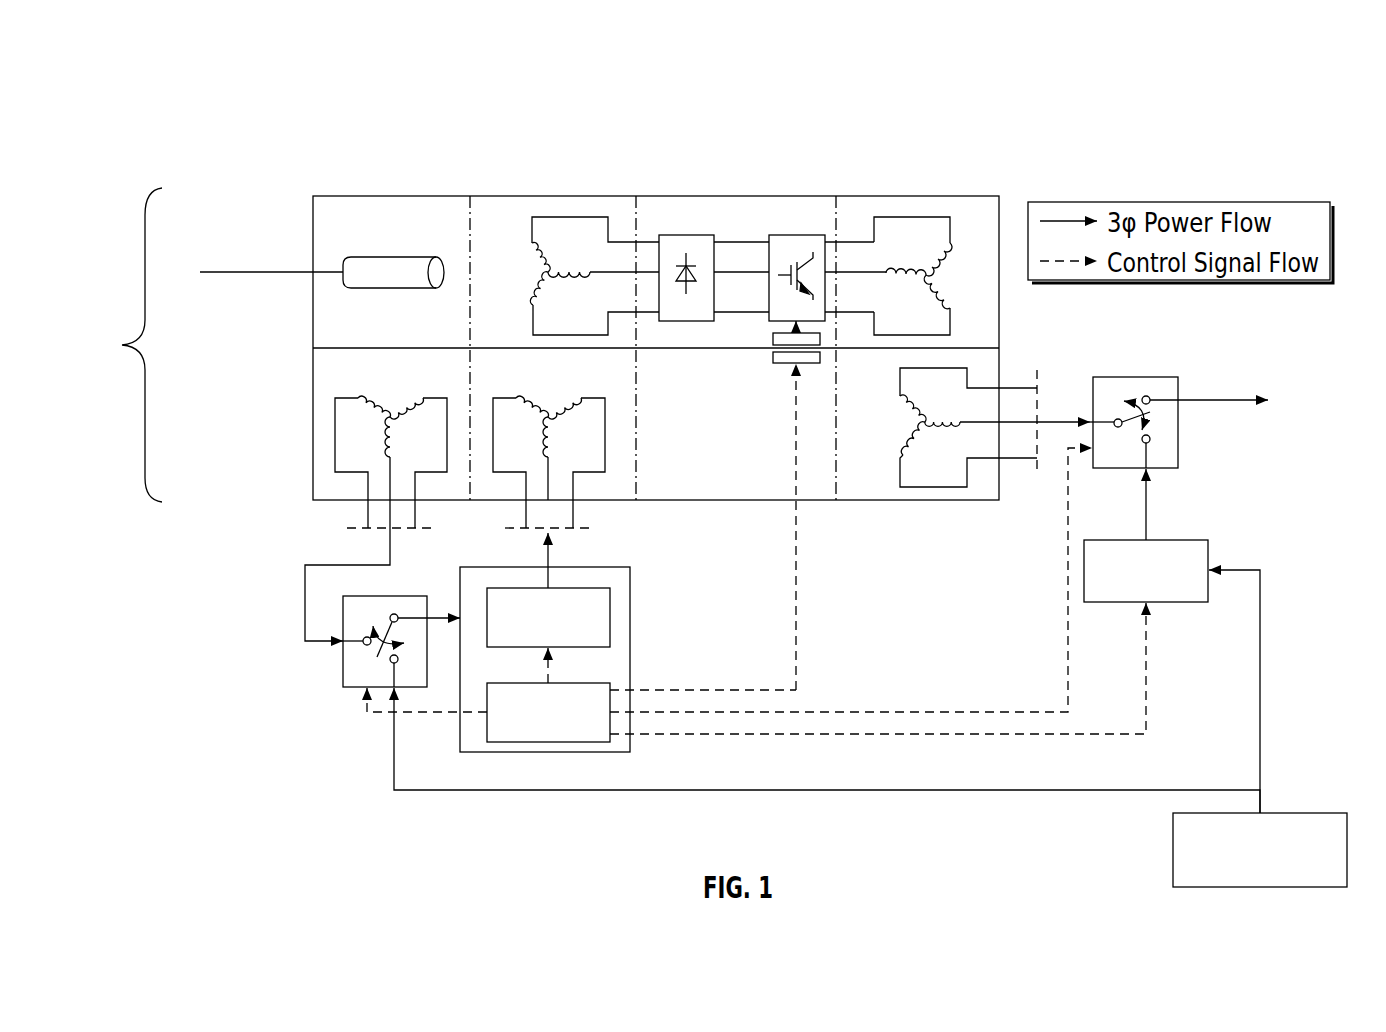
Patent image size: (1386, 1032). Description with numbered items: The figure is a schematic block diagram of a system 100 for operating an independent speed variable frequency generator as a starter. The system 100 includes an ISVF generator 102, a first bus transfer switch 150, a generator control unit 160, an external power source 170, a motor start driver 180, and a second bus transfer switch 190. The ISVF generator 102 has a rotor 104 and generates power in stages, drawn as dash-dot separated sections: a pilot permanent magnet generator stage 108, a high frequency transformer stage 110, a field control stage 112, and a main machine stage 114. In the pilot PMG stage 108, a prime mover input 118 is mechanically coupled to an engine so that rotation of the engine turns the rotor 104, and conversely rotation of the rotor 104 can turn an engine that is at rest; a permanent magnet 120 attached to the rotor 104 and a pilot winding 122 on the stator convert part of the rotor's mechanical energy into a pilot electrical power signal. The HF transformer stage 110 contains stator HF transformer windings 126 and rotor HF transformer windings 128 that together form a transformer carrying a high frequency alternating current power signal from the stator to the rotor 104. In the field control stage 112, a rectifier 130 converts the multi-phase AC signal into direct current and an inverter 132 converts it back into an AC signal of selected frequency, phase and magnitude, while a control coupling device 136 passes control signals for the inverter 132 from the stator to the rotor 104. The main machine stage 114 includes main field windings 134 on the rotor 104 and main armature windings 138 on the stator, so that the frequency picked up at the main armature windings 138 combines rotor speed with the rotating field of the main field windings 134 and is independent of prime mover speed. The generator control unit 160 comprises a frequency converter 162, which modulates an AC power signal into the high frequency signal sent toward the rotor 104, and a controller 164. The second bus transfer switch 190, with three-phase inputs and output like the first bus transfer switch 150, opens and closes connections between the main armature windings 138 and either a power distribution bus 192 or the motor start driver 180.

The system 100 is at (262, 88).
The ISVF generator 102 is at (123, 345).
The rotor 104 is at (312, 210).
The pilot permanent magnet generator stage 108 is at (326, 196).
The HF transformer stage 110 is at (480, 196).
The field control stage 112 is at (658, 196).
The main machine stage 114 is at (848, 196).
The prime mover input 118 is at (243, 272).
The permanent magnet 120 is at (400, 257).
The pilot winding 122 is at (418, 395).
The stator HF transformer windings 126 is at (530, 395).
The rotor HF transformer windings 128 is at (537, 274).
The rectifier 130 is at (702, 235).
The inverter 132 is at (814, 235).
The main field windings 134 is at (928, 290).
The control coupling device 136 is at (782, 363).
The main armature windings 138 is at (910, 460).
The first bus transfer switch 150 is at (343, 676).
The generator control unit 160 is at (589, 567).
The frequency converter 162 is at (610, 621).
The controller 164 is at (560, 681).
The external power source 170 is at (1307, 813).
The motor start driver 180 is at (1168, 540).
The second bus transfer switch 190 is at (1178, 430).
The power distribution bus 192 is at (1222, 400).